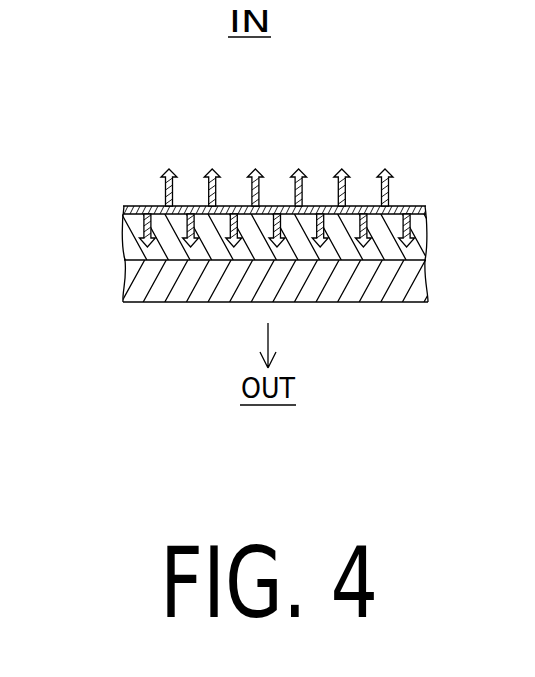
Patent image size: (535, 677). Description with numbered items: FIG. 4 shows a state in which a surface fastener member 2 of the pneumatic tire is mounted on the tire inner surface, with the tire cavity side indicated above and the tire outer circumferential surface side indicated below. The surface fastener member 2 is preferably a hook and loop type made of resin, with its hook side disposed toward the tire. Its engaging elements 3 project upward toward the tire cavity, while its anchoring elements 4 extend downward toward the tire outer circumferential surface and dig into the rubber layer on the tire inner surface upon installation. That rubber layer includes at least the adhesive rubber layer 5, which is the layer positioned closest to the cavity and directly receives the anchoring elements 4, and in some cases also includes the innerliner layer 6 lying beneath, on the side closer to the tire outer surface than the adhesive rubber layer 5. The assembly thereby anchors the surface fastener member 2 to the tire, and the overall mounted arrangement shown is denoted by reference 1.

The laminated heat exchange element 1 is at (143, 206).
The surface fastener member 2 is at (404, 205).
The engaging elements 3 is at (262, 169).
The anchoring elements 4 is at (408, 240).
The adhesive rubber layer 5 is at (133, 232).
The innerliner layer 6 is at (135, 293).